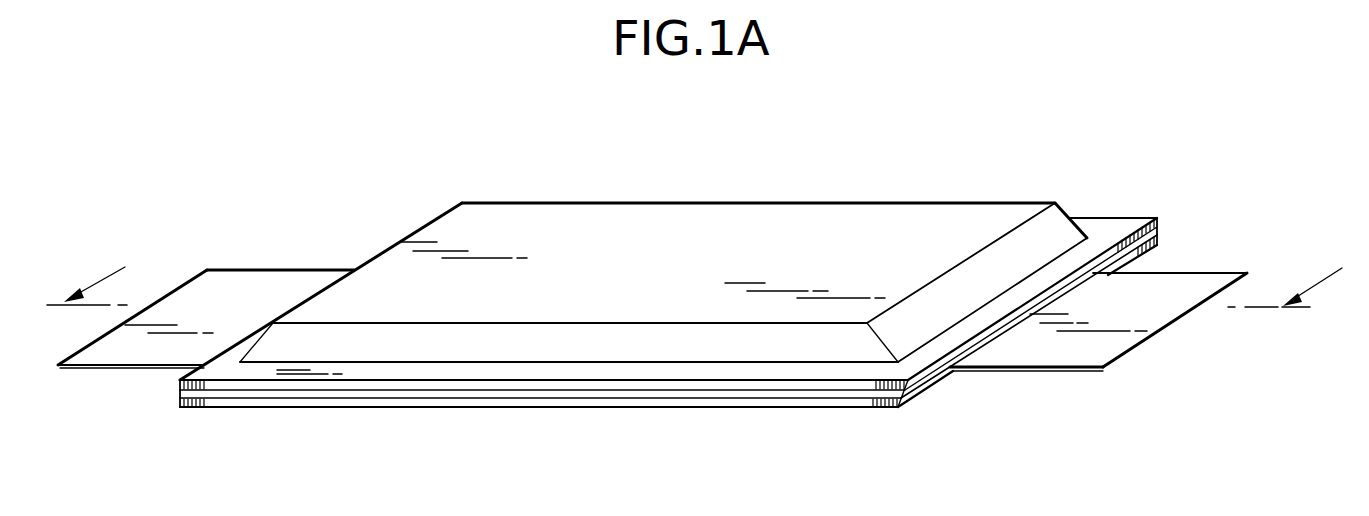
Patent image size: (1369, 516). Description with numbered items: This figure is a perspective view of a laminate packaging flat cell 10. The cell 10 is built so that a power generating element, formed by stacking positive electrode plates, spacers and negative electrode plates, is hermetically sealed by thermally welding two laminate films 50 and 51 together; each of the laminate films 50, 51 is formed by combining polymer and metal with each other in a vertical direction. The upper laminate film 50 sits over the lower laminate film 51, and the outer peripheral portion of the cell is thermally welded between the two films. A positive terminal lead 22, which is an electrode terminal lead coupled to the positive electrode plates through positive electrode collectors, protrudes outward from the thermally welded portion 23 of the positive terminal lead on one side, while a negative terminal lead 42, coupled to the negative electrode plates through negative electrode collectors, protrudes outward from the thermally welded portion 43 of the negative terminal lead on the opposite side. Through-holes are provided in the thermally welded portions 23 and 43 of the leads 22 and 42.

The cell 10 is at (383, 187).
The positive terminal lead 22 is at (243, 290).
The thermally welded portion of the positive terminal lead 23 is at (247, 370).
The negative terminal lead 42 is at (1187, 286).
The thermally welded portion of the negative terminal lead 43 is at (1102, 223).
The laminate film 50 is at (782, 212).
The laminate film 51 is at (702, 400).